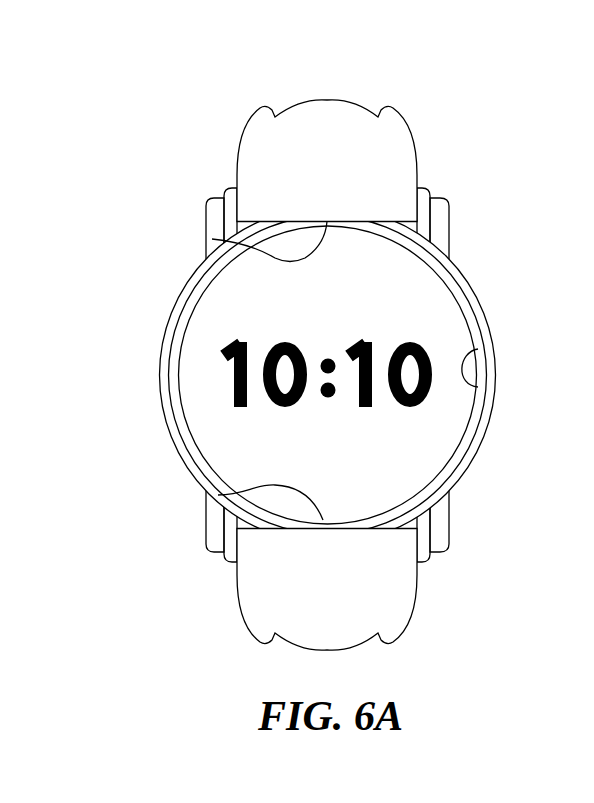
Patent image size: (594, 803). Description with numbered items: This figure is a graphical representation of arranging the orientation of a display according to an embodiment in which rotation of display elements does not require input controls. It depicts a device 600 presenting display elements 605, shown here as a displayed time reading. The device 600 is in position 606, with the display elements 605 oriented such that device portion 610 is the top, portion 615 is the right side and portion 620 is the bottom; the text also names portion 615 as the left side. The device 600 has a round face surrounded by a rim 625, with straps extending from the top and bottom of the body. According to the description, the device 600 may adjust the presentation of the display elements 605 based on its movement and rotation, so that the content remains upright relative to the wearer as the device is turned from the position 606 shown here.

The device 600 is at (195, 102).
The position 606 is at (175, 208).
The device portion 610 is at (212, 239).
The display elements 605 is at (243, 358).
The portion 615 is at (478, 350).
The bezel 625 is at (176, 417).
The portion 620 is at (218, 495).